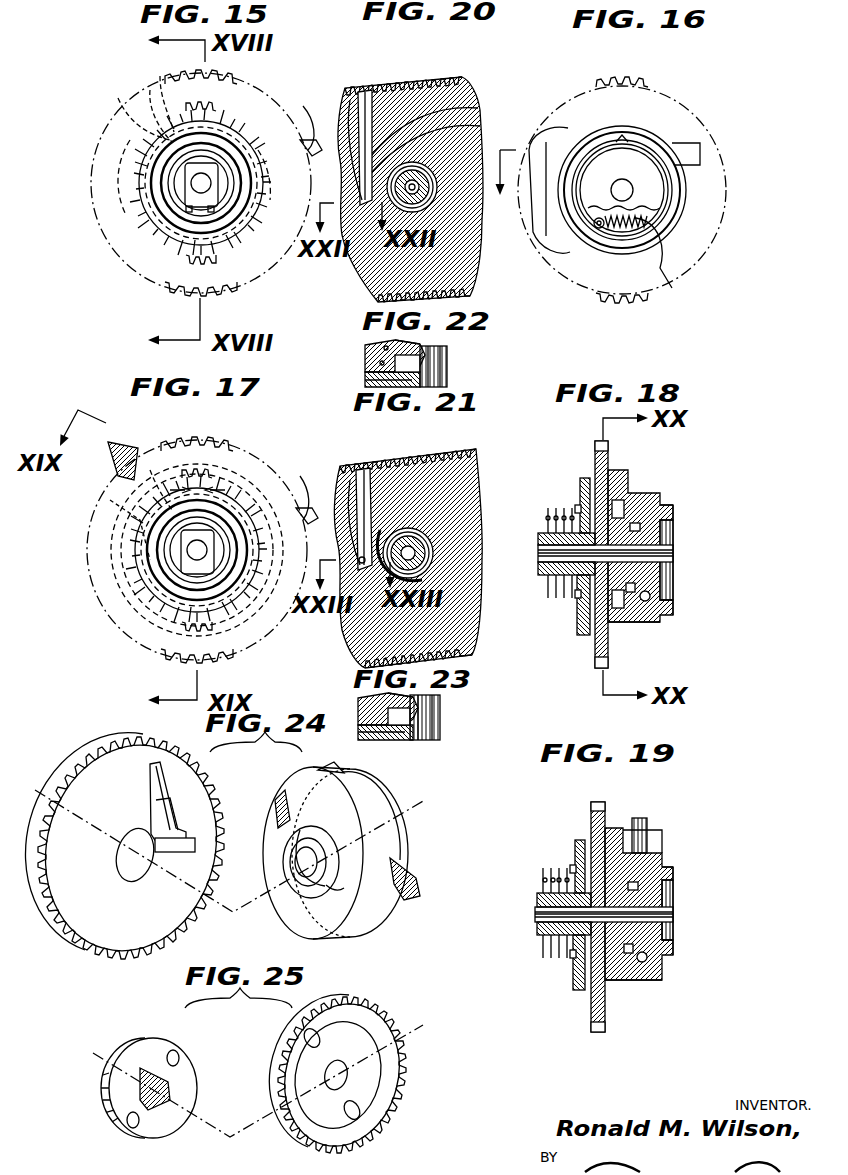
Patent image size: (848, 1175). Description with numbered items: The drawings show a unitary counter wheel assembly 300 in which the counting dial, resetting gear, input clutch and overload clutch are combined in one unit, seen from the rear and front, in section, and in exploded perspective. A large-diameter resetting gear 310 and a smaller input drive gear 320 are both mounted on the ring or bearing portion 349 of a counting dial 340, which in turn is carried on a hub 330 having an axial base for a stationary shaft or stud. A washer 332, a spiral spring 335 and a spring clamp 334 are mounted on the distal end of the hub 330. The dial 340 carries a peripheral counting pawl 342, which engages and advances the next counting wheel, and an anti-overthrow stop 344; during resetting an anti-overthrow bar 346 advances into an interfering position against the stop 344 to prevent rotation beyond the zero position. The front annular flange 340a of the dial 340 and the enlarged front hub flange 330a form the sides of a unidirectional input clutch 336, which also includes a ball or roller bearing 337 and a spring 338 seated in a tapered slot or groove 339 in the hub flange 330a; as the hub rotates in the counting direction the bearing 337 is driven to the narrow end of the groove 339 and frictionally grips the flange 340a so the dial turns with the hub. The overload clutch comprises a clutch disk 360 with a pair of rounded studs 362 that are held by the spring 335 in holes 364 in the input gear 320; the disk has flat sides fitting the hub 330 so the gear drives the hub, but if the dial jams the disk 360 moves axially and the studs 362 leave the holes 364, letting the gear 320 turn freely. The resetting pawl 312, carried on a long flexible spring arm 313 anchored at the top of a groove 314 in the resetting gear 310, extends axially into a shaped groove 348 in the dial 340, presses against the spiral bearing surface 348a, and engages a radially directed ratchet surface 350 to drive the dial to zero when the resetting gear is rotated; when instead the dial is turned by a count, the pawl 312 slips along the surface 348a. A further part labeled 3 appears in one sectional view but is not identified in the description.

In FIG. 23, the shaft 3 is at (440, 730).
In FIG. 15, the counter wheel assembly 300 is at (74, 130).
In FIG. 17, the counter wheel assembly 300 is at (70, 545).
In FIG. 18, the counter wheel assembly 300 is at (712, 523).
In FIG. 19, the counter wheel assembly 300 is at (697, 882).
In FIG. 15, the resetting gear 310 is at (268, 97).
In FIG. 20, the resetting gear 310 is at (460, 95).
In FIG. 16, the resetting gear 310 is at (650, 174).
In FIG. 17, the resetting gear 310 is at (213, 445).
In FIG. 21, the resetting gear 310 is at (427, 542).
In FIG. 22, the resetting gear 310 is at (372, 375).
In FIG. 23, the resetting gear 310 is at (360, 720).
In FIG. 18, the resetting gear 310 is at (602, 442).
In FIG. 19, the resetting gear 310 is at (598, 802).
In FIG. 24, the resetting gear 310 is at (100, 810).
In FIG. 15, the resetting pawl 312 is at (90, 214).
In FIG. 20, the resetting pawl 312 is at (380, 232).
In FIG. 21, the resetting pawl 312 is at (397, 520).
In FIG. 22, the resetting pawl 312 is at (380, 362).
In FIG. 23, the resetting pawl 312 is at (418, 713).
In FIG. 24, the resetting pawl 312 is at (195, 850).
In FIG. 15, the spring arm 313 is at (122, 111).
In FIG. 20, the spring arm 313 is at (355, 122).
In FIG. 17, the spring arm 313 is at (292, 515).
In FIG. 21, the spring arm 313 is at (375, 494).
In FIG. 22, the spring arm 313 is at (370, 384).
In FIG. 23, the spring arm 313 is at (400, 742).
In FIG. 24, the spring arm 313 is at (168, 800).
In FIG. 15, the groove 314 is at (160, 80).
In FIG. 20, the groove 314 is at (398, 100).
In FIG. 21, the groove 314 is at (392, 470).
In FIG. 22, the groove 314 is at (448, 366).
In FIG. 23, the groove 314 is at (392, 732).
In FIG. 24, the groove 314 is at (162, 813).
In FIG. 15, the input drive gear 320 is at (208, 262).
In FIG. 17, the input drive gear 320 is at (212, 482).
In FIG. 18, the input drive gear 320 is at (582, 500).
In FIG. 19, the input drive gear 320 is at (580, 840).
In FIG. 25, the input drive gear 320 is at (355, 1033).
In FIG. 15, the hub 330 is at (194, 191).
In FIG. 20, the hub 330 is at (430, 208).
In FIG. 16, the hub 330 is at (672, 168).
In FIG. 17, the hub 330 is at (185, 565).
In FIG. 21, the hub 330 is at (458, 553).
In FIG. 18, the hub 330 is at (662, 592).
In FIG. 19, the hub 330 is at (574, 911).
In FIG. 16, the hub flange 330a is at (656, 192).
In FIG. 18, the hub flange 330a is at (660, 540).
In FIG. 19, the hub flange 330a is at (665, 878).
In FIG. 15, the washer 332 is at (192, 204).
In FIG. 17, the washer 332 is at (182, 578).
In FIG. 18, the washer 332 is at (548, 510).
In FIG. 19, the washer 332 is at (552, 895).
In FIG. 15, the spring clamp 334 is at (186, 210).
In FIG. 17, the spring clamp 334 is at (182, 585).
In FIG. 18, the spring clamp 334 is at (545, 522).
In FIG. 19, the spring clamp 334 is at (540, 900).
In FIG. 18, the spiral spring 335 is at (568, 510).
In FIG. 19, the spiral spring 335 is at (562, 885).
In FIG. 16, the input clutch 336 is at (660, 220).
In FIG. 18, the input clutch 336 is at (682, 649).
In FIG. 19, the input clutch 336 is at (682, 996).
In FIG. 16, the ball or roller bearing 337 is at (598, 228).
In FIG. 16, the spring 338 is at (660, 270).
In FIG. 18, the spring 338 is at (645, 604).
In FIG. 19, the spring 338 is at (628, 995).
In FIG. 16, the tapered slot or groove 339 is at (598, 232).
In FIG. 18, the tapered slot or groove 339 is at (630, 625).
In FIG. 19, the tapered slot or groove 339 is at (650, 948).
In FIG. 20, the counting dial 340 is at (466, 110).
In FIG. 16, the counting dial 340 is at (647, 161).
In FIG. 21, the counting dial 340 is at (348, 620).
In FIG. 22, the counting dial 340 is at (452, 343).
In FIG. 23, the counting dial 340 is at (364, 699).
In FIG. 18, the counting dial 340 is at (661, 539).
In FIG. 19, the counting dial 340 is at (643, 931).
In FIG. 24, the counting dial 340 is at (353, 855).
In FIG. 16, the front annular flange 340a is at (668, 160).
In FIG. 18, the front annular flange 340a is at (662, 505).
In FIG. 19, the front annular flange 340a is at (660, 982).
In FIG. 24, the front annular flange 340a is at (400, 826).
In FIG. 15, the counting pawl 342 is at (305, 120).
In FIG. 20, the counting pawl 342 is at (517, 128).
In FIG. 17, the counting pawl 342 is at (304, 479).
In FIG. 24, the counting pawl 342 is at (410, 872).
In FIG. 16, the anti-overthrow stop 344 is at (690, 178).
In FIG. 17, the anti-overthrow stop 344 is at (135, 536).
In FIG. 19, the anti-overthrow stop 344 is at (650, 838).
In FIG. 24, the anti-overthrow stop 344 is at (357, 768).
In FIG. 17, the anti-overthrow bar 346 is at (138, 439).
In FIG. 19, the anti-overthrow bar 346 is at (632, 812).
In FIG. 15, the shaped groove 348 is at (289, 175).
In FIG. 24, the shaped groove 348 is at (340, 825).
In FIG. 20, the spiral bearing surface 348a is at (470, 128).
In FIG. 21, the spiral bearing surface 348a is at (442, 578).
In FIG. 22, the spiral bearing surface 348a is at (448, 350).
In FIG. 24, the spiral bearing surface 348a is at (332, 900).
In FIG. 20, the ring portion 349 is at (428, 195).
In FIG. 22, the ring portion 349 is at (446, 380).
In FIG. 18, the ring portion 349 is at (650, 555).
In FIG. 19, the ring portion 349 is at (590, 1000).
In FIG. 24, the ring portion 349 is at (325, 882).
In FIG. 15, the radially directed surface 350 is at (312, 198).
In FIG. 21, the radially directed surface 350 is at (352, 652).
In FIG. 22, the radially directed surface 350 is at (384, 346).
In FIG. 24, the radially directed surface 350 is at (272, 818).
In FIG. 21, the clutch disk 360 is at (462, 568).
In FIG. 18, the clutch disk 360 is at (541, 562).
In FIG. 19, the clutch disk 360 is at (548, 940).
In FIG. 25, the clutch disk 360 is at (138, 1063).
In FIG. 17, the rounded studs 362 is at (252, 482).
In FIG. 18, the rounded studs 362 is at (578, 500).
In FIG. 19, the rounded studs 362 is at (572, 885).
In FIG. 25, the rounded studs 362 is at (177, 1058).
In FIG. 17, the holes 364 is at (110, 590).
In FIG. 18, the holes 364 is at (612, 530).
In FIG. 25, the holes 364 is at (315, 1040).